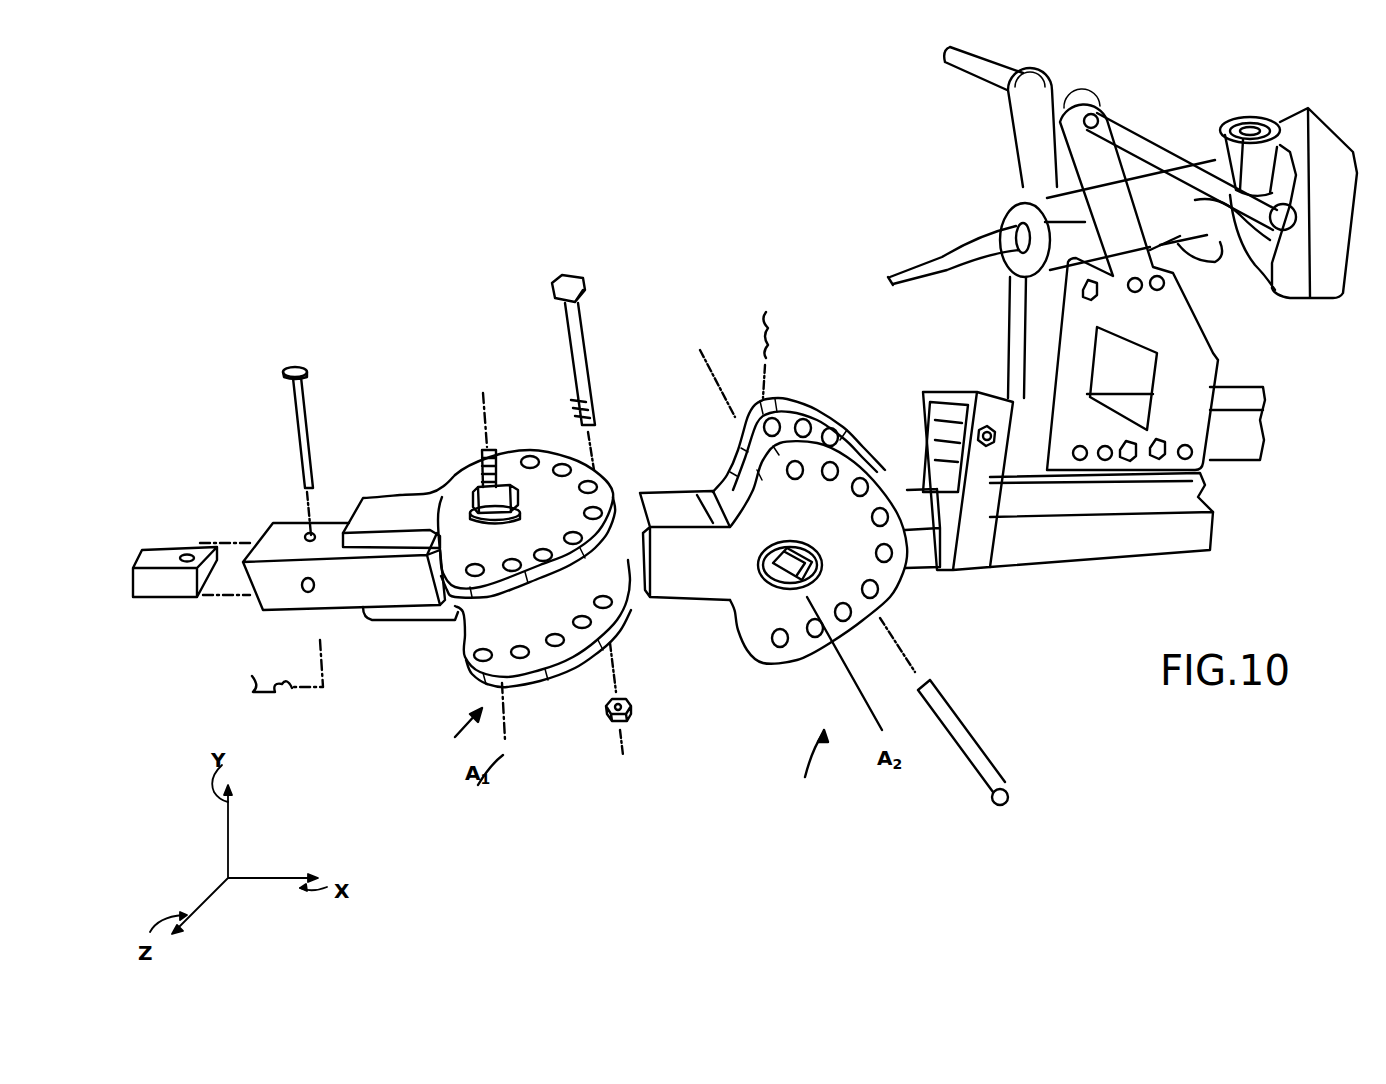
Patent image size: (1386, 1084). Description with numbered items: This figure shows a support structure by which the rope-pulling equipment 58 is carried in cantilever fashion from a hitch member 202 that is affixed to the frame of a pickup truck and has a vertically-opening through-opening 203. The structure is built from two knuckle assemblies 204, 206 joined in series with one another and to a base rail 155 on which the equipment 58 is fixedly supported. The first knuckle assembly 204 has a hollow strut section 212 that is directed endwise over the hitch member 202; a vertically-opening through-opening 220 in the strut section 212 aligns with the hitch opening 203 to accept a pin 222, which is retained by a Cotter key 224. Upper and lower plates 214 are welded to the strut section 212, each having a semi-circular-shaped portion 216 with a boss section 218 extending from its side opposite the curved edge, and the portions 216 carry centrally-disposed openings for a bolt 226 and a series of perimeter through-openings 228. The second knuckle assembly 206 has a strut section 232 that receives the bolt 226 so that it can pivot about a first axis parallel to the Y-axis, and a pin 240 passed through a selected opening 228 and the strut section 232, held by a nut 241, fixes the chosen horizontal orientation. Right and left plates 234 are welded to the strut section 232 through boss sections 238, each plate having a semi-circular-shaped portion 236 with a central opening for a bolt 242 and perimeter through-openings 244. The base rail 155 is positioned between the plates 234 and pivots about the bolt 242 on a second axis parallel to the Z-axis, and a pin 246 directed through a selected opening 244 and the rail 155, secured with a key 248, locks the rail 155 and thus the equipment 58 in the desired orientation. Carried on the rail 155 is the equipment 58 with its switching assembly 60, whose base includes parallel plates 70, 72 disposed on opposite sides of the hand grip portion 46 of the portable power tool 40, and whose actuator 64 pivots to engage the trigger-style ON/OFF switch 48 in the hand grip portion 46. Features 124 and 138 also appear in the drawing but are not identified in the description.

The hitch member 202 is at (157, 600).
The vertically-opening through-opening 203 is at (184, 556).
The strut section 212 is at (320, 607).
The vertically-opening through-opening 220 is at (306, 536).
The pin 222 is at (292, 418).
The Cotter key 224 is at (250, 679).
The boss section 218 is at (420, 622).
The semi-circular-shaped portion 216 is at (463, 667).
The through-openings 228 is at (588, 630).
The bolt 226 is at (487, 455).
The plates 214 is at (518, 687).
The pin 240 is at (583, 338).
The nut 241 is at (633, 720).
The boss section 238 is at (713, 643).
The strut section 232 is at (677, 507).
The plates 234 is at (845, 645).
The semi-circular-shaped portion 236 is at (790, 657).
The through-openings 244 is at (873, 590).
The bolt 242 is at (777, 587).
The pin 246 is at (950, 707).
The key 248 is at (766, 313).
The knuckle assembly 204 is at (434, 739).
The knuckle assembly 206 is at (807, 785).
The plate 72 is at (1005, 392).
The base rail 155 is at (1033, 540).
The rope-pulling equipment 58 is at (1270, 68).
The switching assembly 60 is at (1218, 380).
The actuator 64 is at (1010, 133).
The plate 70 is at (1000, 340).
The hand grip portion 46 is at (1018, 205).
The rod 124 is at (1120, 113).
The boss 138 is at (1257, 117).
The trigger-style ON/OFF switch 48 is at (1195, 260).
The portable power tool 40 is at (1318, 300).